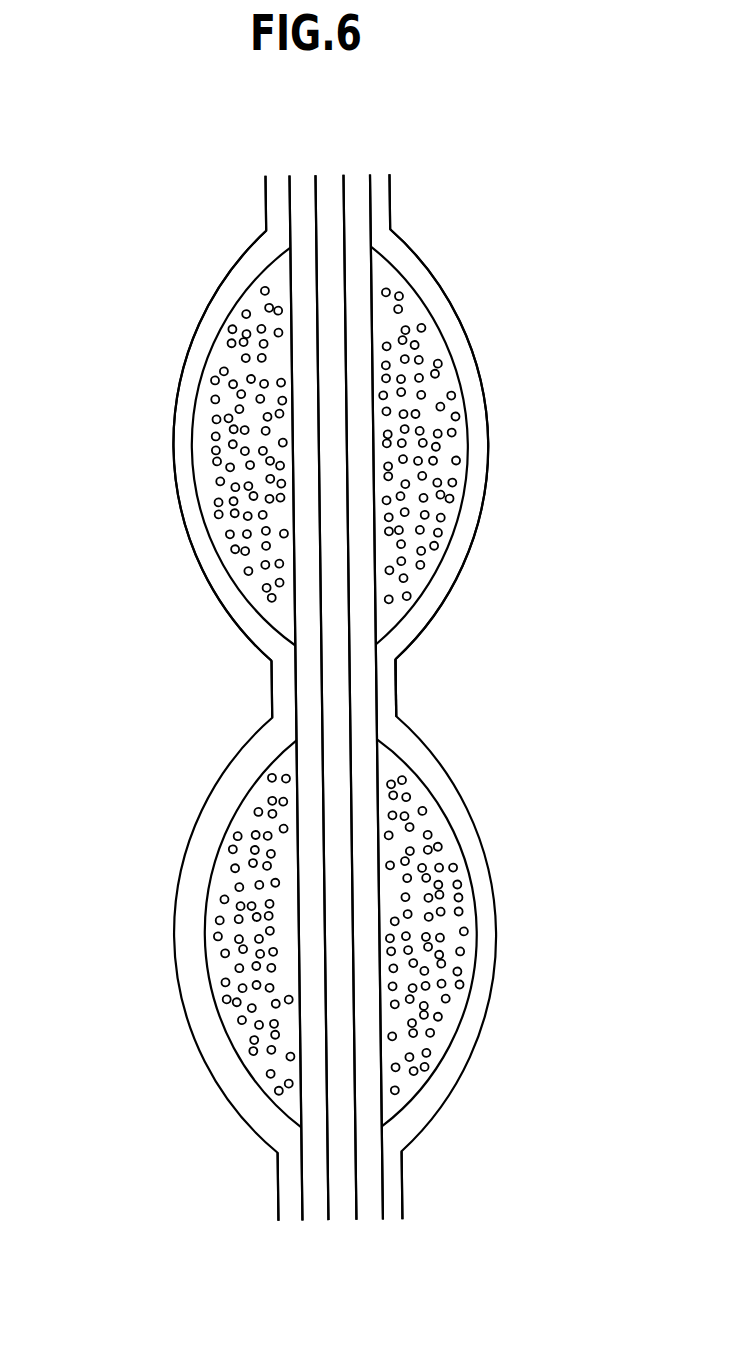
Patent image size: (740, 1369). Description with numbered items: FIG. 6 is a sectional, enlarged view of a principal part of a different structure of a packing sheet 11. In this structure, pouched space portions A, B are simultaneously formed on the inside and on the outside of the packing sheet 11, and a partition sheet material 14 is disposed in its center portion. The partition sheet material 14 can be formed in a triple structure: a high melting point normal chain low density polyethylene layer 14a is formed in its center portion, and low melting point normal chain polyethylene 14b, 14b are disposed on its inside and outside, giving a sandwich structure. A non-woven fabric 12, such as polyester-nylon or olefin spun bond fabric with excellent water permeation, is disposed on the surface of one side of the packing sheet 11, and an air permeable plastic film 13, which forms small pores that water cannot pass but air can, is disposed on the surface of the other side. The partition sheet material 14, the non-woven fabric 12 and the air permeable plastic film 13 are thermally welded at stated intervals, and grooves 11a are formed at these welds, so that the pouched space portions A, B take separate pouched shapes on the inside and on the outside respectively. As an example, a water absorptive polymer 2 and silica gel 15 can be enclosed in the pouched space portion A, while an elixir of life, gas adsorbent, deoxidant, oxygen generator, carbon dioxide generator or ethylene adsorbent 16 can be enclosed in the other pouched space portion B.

The water absorptive polymer 2 is at (238, 407).
The packing sheet 11 is at (138, 995).
The grooves 11a is at (413, 201).
The non-woven fabric 12 is at (238, 617).
The air permeable plastic film 13 is at (390, 673).
The partition sheet material 14 is at (375, 167).
The high melting point normal chain low density polyethylene layer 14a is at (340, 1210).
The low melting point normal chain polyethylene 14b is at (322, 1205).
The silica gel 15 is at (232, 500).
The ethylene adsorbent 16 is at (459, 434).
The pouched space portion A is at (230, 317).
The pouched space portion B is at (430, 323).